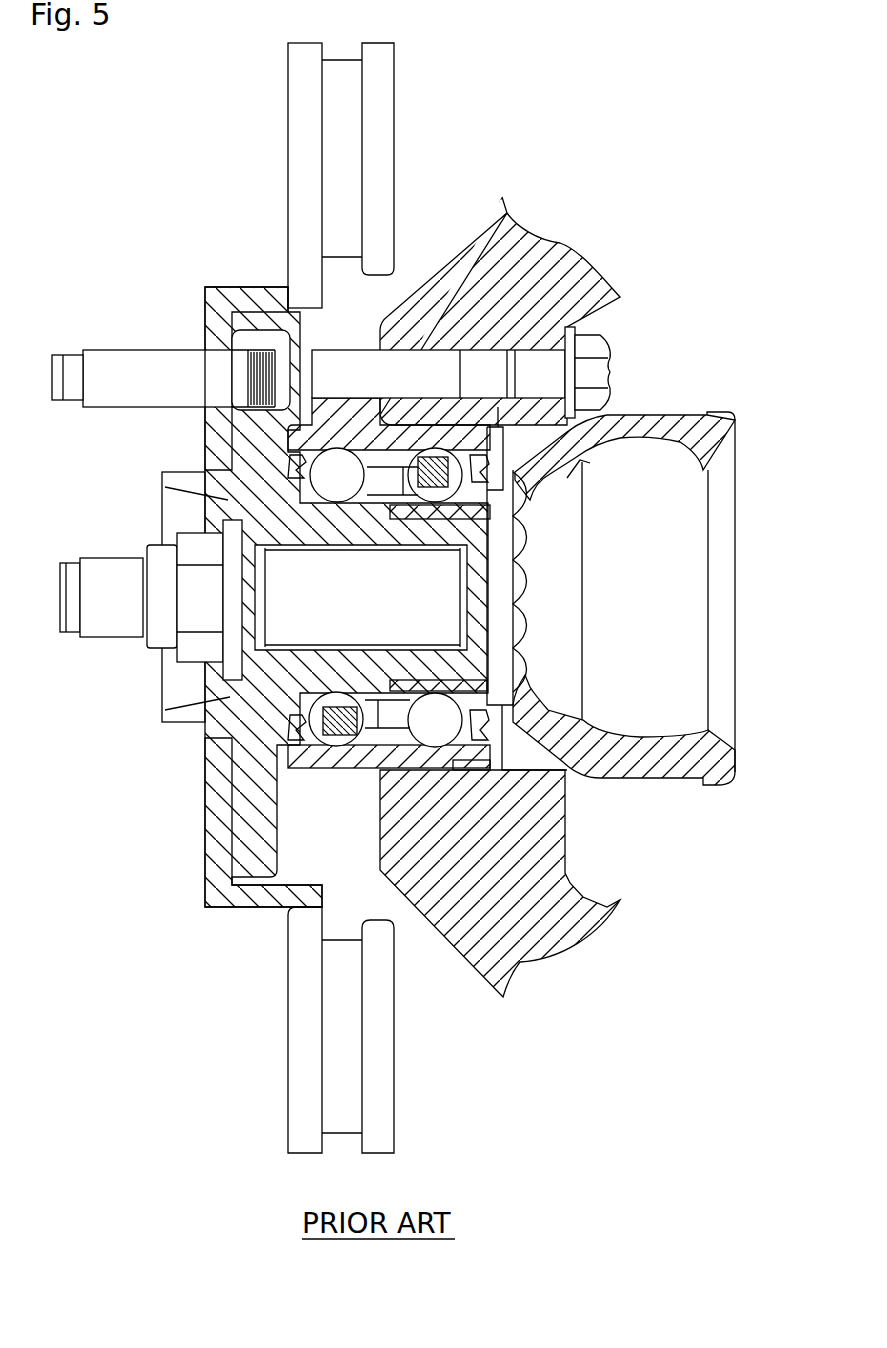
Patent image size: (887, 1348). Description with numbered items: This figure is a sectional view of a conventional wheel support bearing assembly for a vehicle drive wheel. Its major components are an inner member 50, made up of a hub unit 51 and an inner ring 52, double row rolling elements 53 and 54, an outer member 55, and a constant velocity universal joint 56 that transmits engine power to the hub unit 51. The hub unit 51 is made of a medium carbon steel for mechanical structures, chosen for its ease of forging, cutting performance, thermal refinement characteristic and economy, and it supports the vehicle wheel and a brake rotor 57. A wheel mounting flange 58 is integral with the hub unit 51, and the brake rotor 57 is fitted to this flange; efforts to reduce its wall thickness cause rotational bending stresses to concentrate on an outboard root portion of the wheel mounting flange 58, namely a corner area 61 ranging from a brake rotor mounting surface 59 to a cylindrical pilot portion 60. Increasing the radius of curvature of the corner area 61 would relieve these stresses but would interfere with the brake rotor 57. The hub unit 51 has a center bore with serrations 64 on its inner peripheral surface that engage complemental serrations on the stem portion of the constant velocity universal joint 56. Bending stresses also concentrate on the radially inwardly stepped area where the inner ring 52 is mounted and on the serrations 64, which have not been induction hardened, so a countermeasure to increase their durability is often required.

The inner member 50 is at (130, 711).
The hub unit 51 is at (182, 722).
The inner ring 52 is at (513, 517).
The rolling elements 53 is at (322, 470).
The rolling elements 54 is at (440, 730).
The outer member 55 is at (390, 445).
The constant velocity universal joint 56 is at (647, 808).
The brake rotor 57 is at (300, 127).
The wheel mounting flange 58 is at (228, 335).
The brake rotor mounting surface 59 is at (230, 832).
The cylindrical pilot portion 60 is at (200, 480).
The corner area 61 is at (225, 452).
The serrations 64 is at (280, 545).